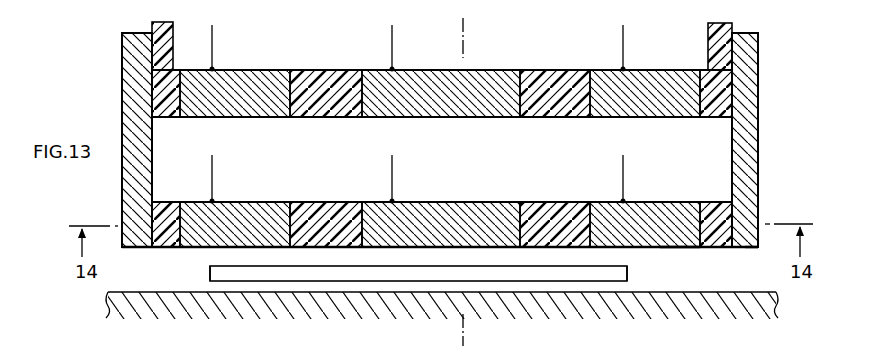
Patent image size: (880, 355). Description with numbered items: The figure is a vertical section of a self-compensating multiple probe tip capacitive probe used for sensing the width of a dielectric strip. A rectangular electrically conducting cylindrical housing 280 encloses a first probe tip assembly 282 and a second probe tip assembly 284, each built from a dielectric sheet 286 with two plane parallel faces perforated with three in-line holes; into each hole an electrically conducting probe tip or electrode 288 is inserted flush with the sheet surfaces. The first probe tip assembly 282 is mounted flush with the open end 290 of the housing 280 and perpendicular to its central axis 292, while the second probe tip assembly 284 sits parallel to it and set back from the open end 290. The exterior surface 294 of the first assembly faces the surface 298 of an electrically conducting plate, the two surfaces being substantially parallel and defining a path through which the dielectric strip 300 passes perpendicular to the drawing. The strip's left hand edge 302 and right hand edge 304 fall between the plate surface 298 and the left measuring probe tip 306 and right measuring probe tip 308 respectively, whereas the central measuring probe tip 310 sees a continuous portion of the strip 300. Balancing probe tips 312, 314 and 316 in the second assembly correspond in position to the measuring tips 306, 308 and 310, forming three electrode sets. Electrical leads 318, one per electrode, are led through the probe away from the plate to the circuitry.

The cylindrical housing 280 is at (760, 60).
The first probe tip assembly 282 is at (452, 190).
The second probe tip assembly 284 is at (388, 121).
The dielectric sheet 286 is at (315, 77).
The probe tip or electrode 288 is at (223, 71).
The open end 290 is at (754, 247).
The central axis 292 is at (464, 42).
The exterior surface 294 is at (677, 252).
The plate surface 298 is at (155, 291).
The dielectric strip 300 is at (452, 270).
The left hand edge 302 is at (210, 270).
The right hand edge 304 is at (628, 278).
The left measuring probe tip 306 is at (252, 235).
The right measuring probe tip 308 is at (664, 235).
The central measuring probe tip 310 is at (456, 235).
The balancing probe tip 312 is at (252, 105).
The balancing probe tip 314 is at (666, 105).
The balancing probe tip 316 is at (452, 105).
The electrical leads 318 is at (212, 37).